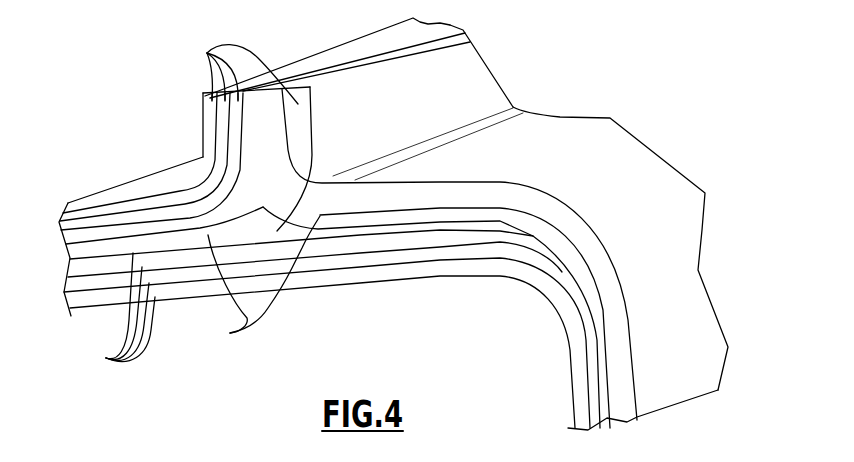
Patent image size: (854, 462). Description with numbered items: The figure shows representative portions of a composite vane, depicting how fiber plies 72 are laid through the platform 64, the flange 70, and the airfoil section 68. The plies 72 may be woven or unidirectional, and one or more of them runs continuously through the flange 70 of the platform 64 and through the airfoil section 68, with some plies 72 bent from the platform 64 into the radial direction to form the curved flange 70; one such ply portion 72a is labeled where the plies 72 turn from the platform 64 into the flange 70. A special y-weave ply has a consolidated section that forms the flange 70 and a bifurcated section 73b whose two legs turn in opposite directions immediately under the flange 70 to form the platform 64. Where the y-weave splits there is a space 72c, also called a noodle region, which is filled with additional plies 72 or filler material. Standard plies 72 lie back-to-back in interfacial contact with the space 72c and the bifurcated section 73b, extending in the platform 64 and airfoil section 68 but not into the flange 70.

The first platform 64 is at (106, 198).
The airfoil section 68 is at (633, 327).
The flange 70 is at (308, 50).
The fiber plies 72 is at (185, 206).
The pillar front flange portion 72a is at (260, 173).
The space 72c is at (317, 178).
The bifurcated section 73b is at (230, 333).